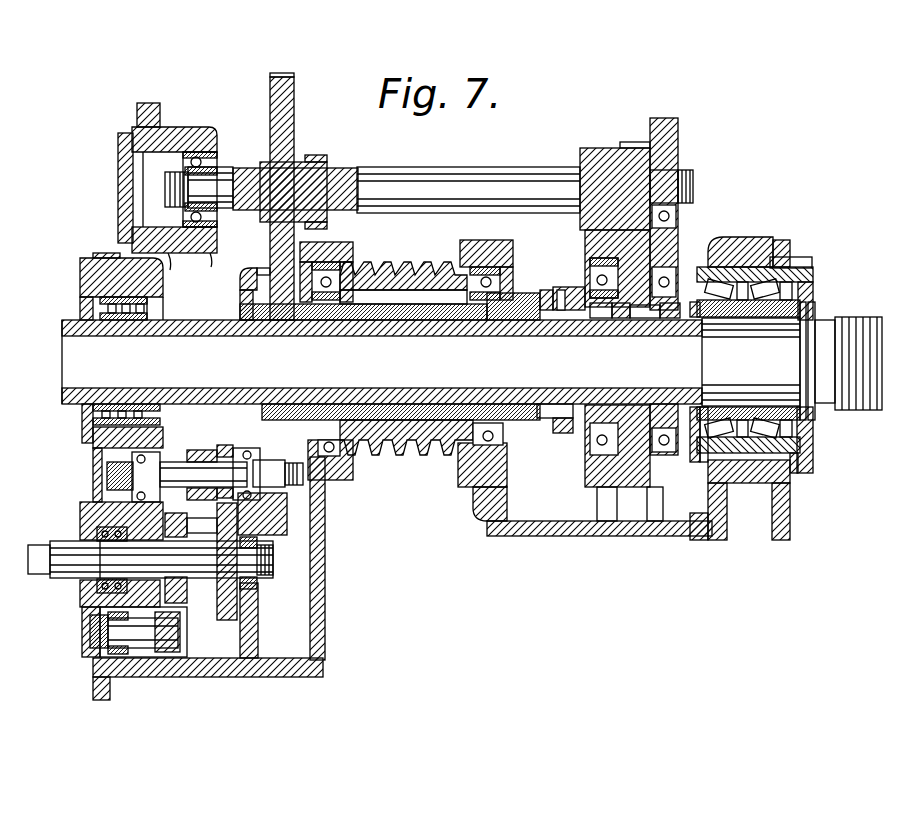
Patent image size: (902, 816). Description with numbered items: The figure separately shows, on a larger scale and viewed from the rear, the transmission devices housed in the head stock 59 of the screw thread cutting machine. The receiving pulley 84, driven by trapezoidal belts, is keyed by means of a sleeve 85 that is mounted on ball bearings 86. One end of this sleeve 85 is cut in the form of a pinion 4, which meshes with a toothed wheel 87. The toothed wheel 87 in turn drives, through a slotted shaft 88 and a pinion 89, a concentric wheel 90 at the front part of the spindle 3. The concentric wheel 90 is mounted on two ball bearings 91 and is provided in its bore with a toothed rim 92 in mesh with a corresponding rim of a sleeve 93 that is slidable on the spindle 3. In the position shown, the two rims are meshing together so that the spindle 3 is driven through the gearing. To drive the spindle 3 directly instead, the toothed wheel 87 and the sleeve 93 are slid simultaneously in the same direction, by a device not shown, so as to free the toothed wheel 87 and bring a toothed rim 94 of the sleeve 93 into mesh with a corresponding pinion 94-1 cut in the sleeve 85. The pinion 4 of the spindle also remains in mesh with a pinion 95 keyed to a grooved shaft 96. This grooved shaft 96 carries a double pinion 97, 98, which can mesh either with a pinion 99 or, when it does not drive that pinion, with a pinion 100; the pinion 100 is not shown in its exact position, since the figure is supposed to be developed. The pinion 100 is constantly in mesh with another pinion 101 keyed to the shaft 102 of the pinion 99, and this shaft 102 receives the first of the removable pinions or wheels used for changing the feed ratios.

The spindle 3 is at (577, 390).
The pinion 4 is at (272, 318).
The head stock 59 is at (326, 557).
The receiving pulley 84 is at (405, 270).
The sleeve 85 is at (410, 448).
The ball bearings 86 is at (352, 262).
The toothed wheel 87 is at (289, 105).
The slotted shaft 88 is at (315, 190).
The pinion 89 is at (635, 148).
The concentric wheel 90 is at (618, 255).
The ball bearings 91 is at (675, 262).
The toothed rim 92 is at (645, 310).
The sleeve 93 is at (598, 305).
The toothed rim 94 is at (553, 418).
The pinion 94-1 is at (534, 303).
The pinion 95 is at (288, 512).
The grooved shaft 96 is at (175, 475).
The double pinion 97 is at (224, 446).
The double pinion 98 is at (203, 450).
The pinion 99 is at (224, 620).
The pinion 100 is at (168, 650).
The pinion 101 is at (174, 532).
The shaft 102 is at (73, 560).